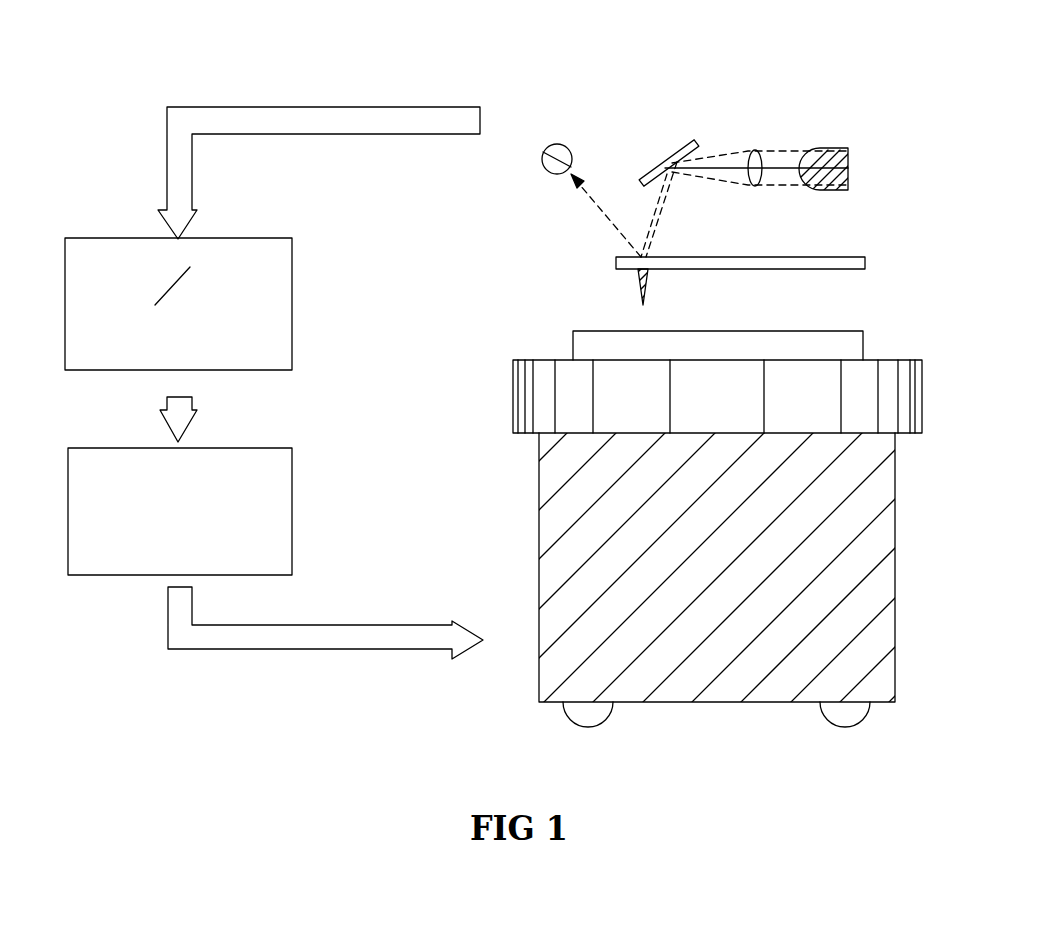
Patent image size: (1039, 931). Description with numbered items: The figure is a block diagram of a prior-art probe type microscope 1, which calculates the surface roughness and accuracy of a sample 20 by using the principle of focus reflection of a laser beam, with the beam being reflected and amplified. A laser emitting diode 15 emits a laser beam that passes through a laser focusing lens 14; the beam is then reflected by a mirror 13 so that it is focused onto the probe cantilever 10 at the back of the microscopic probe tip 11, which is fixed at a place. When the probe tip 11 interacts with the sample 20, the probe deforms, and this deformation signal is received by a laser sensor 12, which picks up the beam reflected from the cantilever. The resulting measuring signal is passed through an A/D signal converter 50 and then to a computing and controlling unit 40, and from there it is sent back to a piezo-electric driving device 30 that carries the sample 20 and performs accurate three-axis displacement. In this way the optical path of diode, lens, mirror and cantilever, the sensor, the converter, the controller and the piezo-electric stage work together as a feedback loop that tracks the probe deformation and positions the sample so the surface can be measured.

The probe microscope 1 is at (941, 176).
The probe cantilever 10 is at (820, 265).
The probe tip 11 is at (638, 278).
The laser sensor 12 is at (560, 152).
The mirror 13 is at (673, 158).
The laser focusing lens 14 is at (753, 152).
The laser emitting diode 15 is at (825, 157).
The sample 20 is at (822, 345).
The piezo-electric driving device 30 is at (873, 535).
The computing and controlling unit 40 is at (277, 515).
The A/D signal converter 50 is at (275, 300).